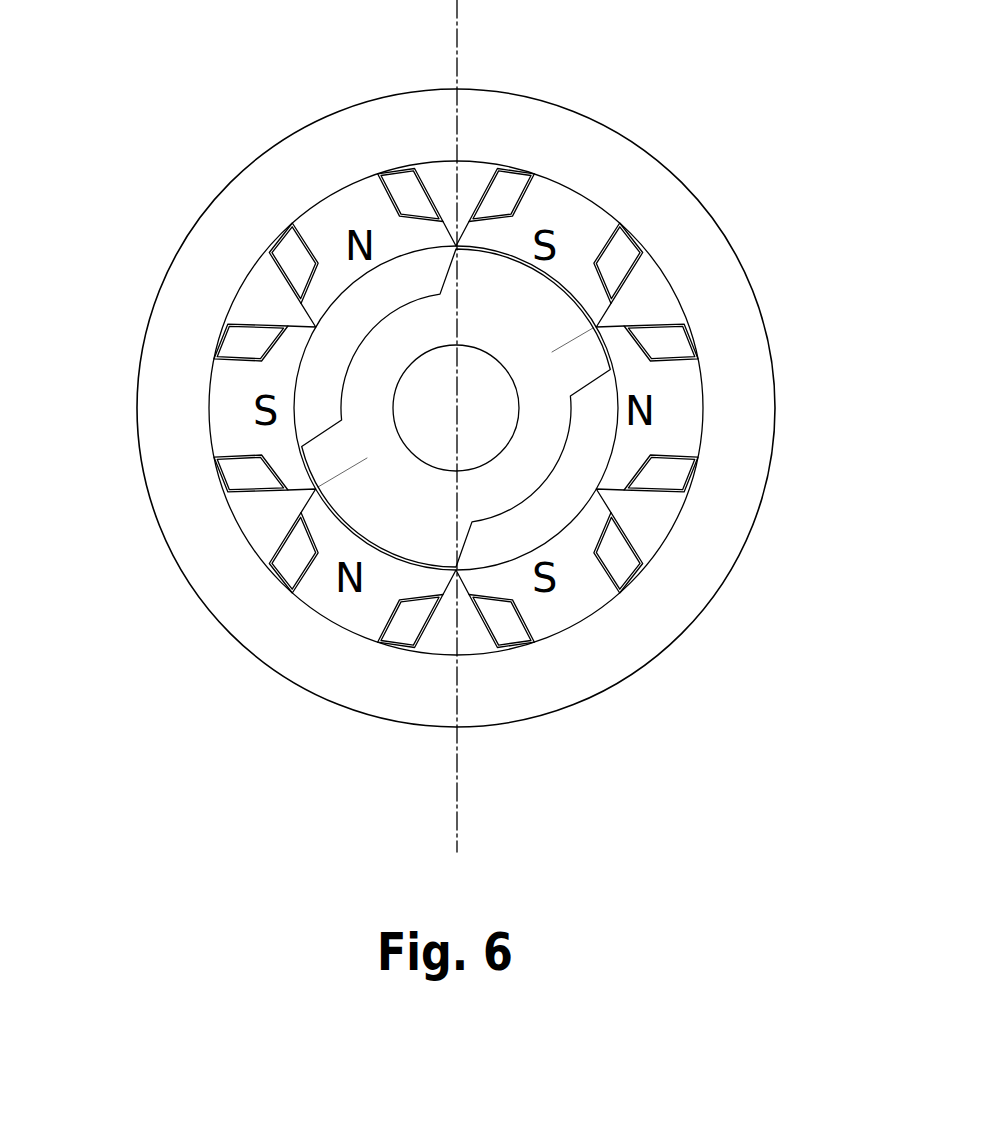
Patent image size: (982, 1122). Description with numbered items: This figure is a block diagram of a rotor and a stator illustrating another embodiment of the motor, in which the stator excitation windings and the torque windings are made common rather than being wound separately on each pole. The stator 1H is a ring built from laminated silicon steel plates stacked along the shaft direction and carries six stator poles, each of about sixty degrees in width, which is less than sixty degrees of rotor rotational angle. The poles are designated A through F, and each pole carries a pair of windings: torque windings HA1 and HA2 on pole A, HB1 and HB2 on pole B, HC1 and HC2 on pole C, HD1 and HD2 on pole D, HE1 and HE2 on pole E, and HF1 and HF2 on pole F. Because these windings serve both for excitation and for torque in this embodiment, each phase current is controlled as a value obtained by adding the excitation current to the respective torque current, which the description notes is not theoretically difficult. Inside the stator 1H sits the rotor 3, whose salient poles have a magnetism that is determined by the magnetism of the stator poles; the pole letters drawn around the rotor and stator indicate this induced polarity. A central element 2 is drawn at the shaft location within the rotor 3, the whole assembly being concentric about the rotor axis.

The stator 1H is at (717, 238).
The rotor 2 is at (624, 408).
The rotor 3 is at (425, 506).
The torque winding HA1 is at (635, 333).
The torque winding HA2 is at (637, 484).
The torque winding HB1 is at (487, 212).
The torque winding HB2 is at (616, 288).
The torque winding HC1 is at (293, 287).
The torque winding HC2 is at (425, 212).
The torque winding HD1 is at (272, 483).
The torque winding HD2 is at (274, 334).
The torque winding HE1 is at (431, 605).
The torque winding HE2 is at (295, 526).
The torque winding HF1 is at (609, 529).
The torque winding HF2 is at (482, 605).